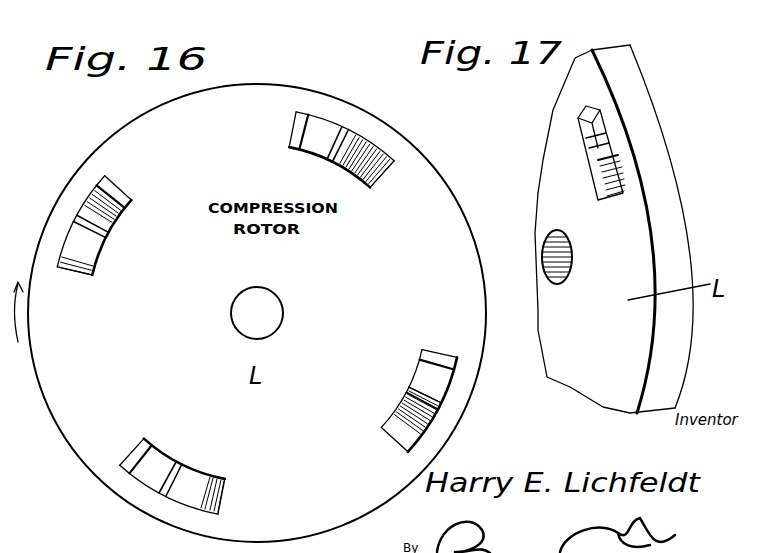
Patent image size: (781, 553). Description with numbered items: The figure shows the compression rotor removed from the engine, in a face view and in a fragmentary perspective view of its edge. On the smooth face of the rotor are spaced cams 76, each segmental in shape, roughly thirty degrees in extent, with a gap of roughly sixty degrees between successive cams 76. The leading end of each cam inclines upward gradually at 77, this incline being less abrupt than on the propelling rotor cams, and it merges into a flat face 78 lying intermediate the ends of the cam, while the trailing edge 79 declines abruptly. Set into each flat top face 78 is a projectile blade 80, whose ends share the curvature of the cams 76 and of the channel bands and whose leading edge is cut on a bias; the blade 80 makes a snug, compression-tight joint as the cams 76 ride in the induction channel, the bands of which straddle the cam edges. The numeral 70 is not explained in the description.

In FIG. 17, the rotor shaft 70 is at (560, 10).
In FIG. 16, the cam 76 is at (333, 122).
In FIG. 17, the cam 76 is at (629, 161).
In FIG. 16, the inclined leading end 77 is at (110, 191).
In FIG. 17, the inclined leading end 77 is at (609, 201).
In FIG. 16, the flat face 78 is at (92, 255).
In FIG. 17, the flat face 78 is at (586, 144).
In FIG. 16, the trailing edge 79 is at (76, 268).
In FIG. 17, the trailing edge 79 is at (584, 112).
In FIG. 16, the projectile blade 80 is at (76, 220).
In FIG. 17, the projectile blade 80 is at (614, 156).